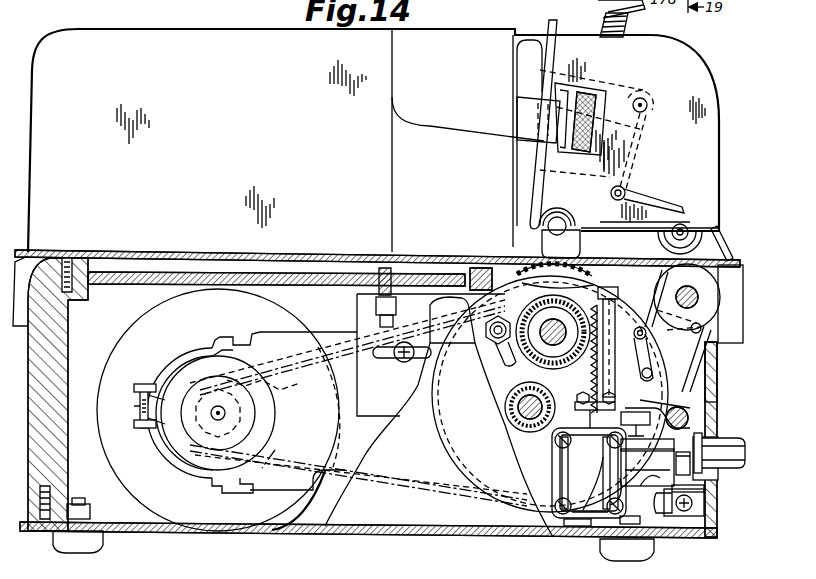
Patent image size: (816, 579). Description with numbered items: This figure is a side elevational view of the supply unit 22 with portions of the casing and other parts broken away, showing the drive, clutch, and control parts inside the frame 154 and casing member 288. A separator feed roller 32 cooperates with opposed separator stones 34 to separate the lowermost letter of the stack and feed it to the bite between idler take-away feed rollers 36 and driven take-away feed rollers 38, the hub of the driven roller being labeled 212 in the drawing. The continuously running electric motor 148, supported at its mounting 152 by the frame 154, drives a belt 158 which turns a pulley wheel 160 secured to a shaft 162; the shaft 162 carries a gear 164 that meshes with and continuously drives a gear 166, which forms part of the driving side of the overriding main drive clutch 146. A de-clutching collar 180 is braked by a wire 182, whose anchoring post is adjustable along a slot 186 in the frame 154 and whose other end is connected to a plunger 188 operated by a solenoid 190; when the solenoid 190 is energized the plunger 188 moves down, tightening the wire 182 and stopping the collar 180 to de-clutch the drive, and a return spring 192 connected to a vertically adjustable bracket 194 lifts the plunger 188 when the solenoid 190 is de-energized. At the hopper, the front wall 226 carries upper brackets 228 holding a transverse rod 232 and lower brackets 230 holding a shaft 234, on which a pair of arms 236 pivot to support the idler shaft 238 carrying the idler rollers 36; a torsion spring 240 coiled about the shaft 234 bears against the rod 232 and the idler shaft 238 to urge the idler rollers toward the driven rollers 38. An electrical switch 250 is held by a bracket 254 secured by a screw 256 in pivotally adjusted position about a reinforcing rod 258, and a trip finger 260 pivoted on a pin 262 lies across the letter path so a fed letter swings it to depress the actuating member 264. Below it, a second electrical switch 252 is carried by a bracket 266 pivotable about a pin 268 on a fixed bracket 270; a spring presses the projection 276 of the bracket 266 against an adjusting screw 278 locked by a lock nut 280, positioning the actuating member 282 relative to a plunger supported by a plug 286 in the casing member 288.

The supply unit 22 is at (103, 22).
The separator feed roller 32 is at (520, 255).
The separator stones 34 is at (580, 243).
The idler take-away feed rollers 36 is at (716, 228).
The driven take-away feed rollers 38 is at (719, 294).
The main drive clutch 146 is at (503, 358).
The electric motor 148 is at (134, 336).
The motor support 152 is at (200, 362).
The frame 154 is at (284, 340).
The belt 158 is at (286, 372).
The pulley wheel 160 is at (442, 446).
The shaft 162 is at (530, 417).
The gear 164 is at (358, 403).
The gear 166 is at (520, 413).
The de-clutching collar 180 is at (602, 372).
The wire 182 is at (514, 348).
The slot 186 is at (494, 368).
The plunger 188 is at (607, 427).
The solenoid 190 is at (556, 470).
The return spring 192 is at (606, 310).
The bracket 194 is at (611, 345).
The hub 212 is at (697, 303).
The front wall 226 is at (557, 53).
The upper brackets 228 is at (627, 83).
The transverse rod 232 is at (654, 82).
The lower brackets 230 is at (575, 221).
The shaft 234 is at (639, 188).
The arms 236 is at (644, 193).
The idler shaft 238 is at (670, 233).
The torsion spring 240 is at (637, 145).
The electrical switch 250 is at (684, 371).
The electrical switch 252 is at (654, 470).
The bracket 254 is at (700, 394).
The screw 256 is at (641, 410).
The reinforcing rod 258 is at (688, 418).
The trip finger 260 is at (734, 256).
The pin 262 is at (645, 334).
The actuating member 264 is at (652, 318).
The bracket 266 is at (566, 510).
The pin 268 is at (706, 493).
The bracket 270 is at (700, 512).
The projection 276 is at (634, 486).
The adjusting screw 278 is at (662, 540).
The lock nut 280 is at (700, 540).
The actuating member 282 is at (712, 440).
The plug 286 is at (746, 455).
The casing member 288 is at (377, 414).